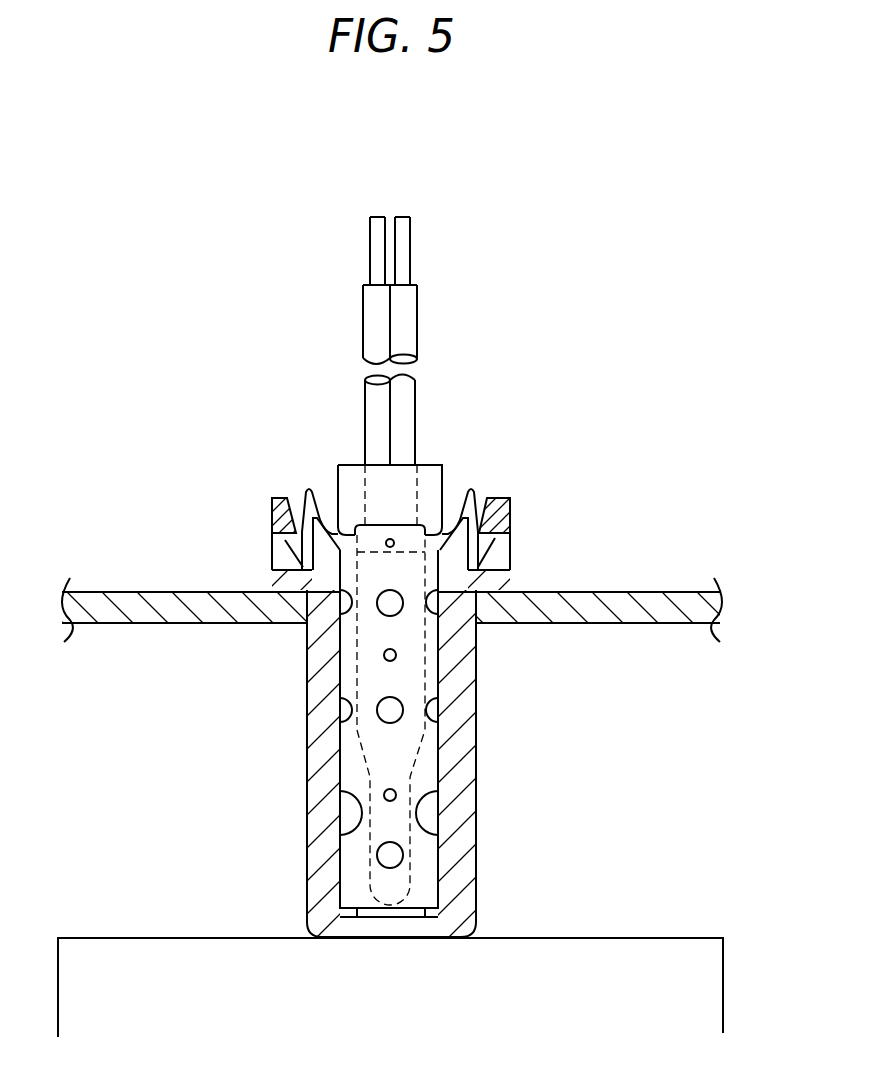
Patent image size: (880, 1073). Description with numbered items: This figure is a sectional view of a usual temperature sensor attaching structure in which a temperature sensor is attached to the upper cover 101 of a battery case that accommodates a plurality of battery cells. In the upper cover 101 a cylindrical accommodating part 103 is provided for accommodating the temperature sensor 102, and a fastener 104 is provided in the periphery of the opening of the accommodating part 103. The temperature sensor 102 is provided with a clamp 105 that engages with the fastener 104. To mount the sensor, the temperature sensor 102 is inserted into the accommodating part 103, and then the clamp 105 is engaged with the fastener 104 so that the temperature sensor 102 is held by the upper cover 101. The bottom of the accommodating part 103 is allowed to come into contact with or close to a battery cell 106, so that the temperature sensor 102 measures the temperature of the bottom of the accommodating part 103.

The upper cover 101 is at (589, 592).
The temperature sensor 102 is at (434, 458).
The accommodating part 103 is at (463, 723).
The fastener 104 is at (273, 500).
The clamp 105 is at (298, 541).
The battery cell 106 is at (658, 943).